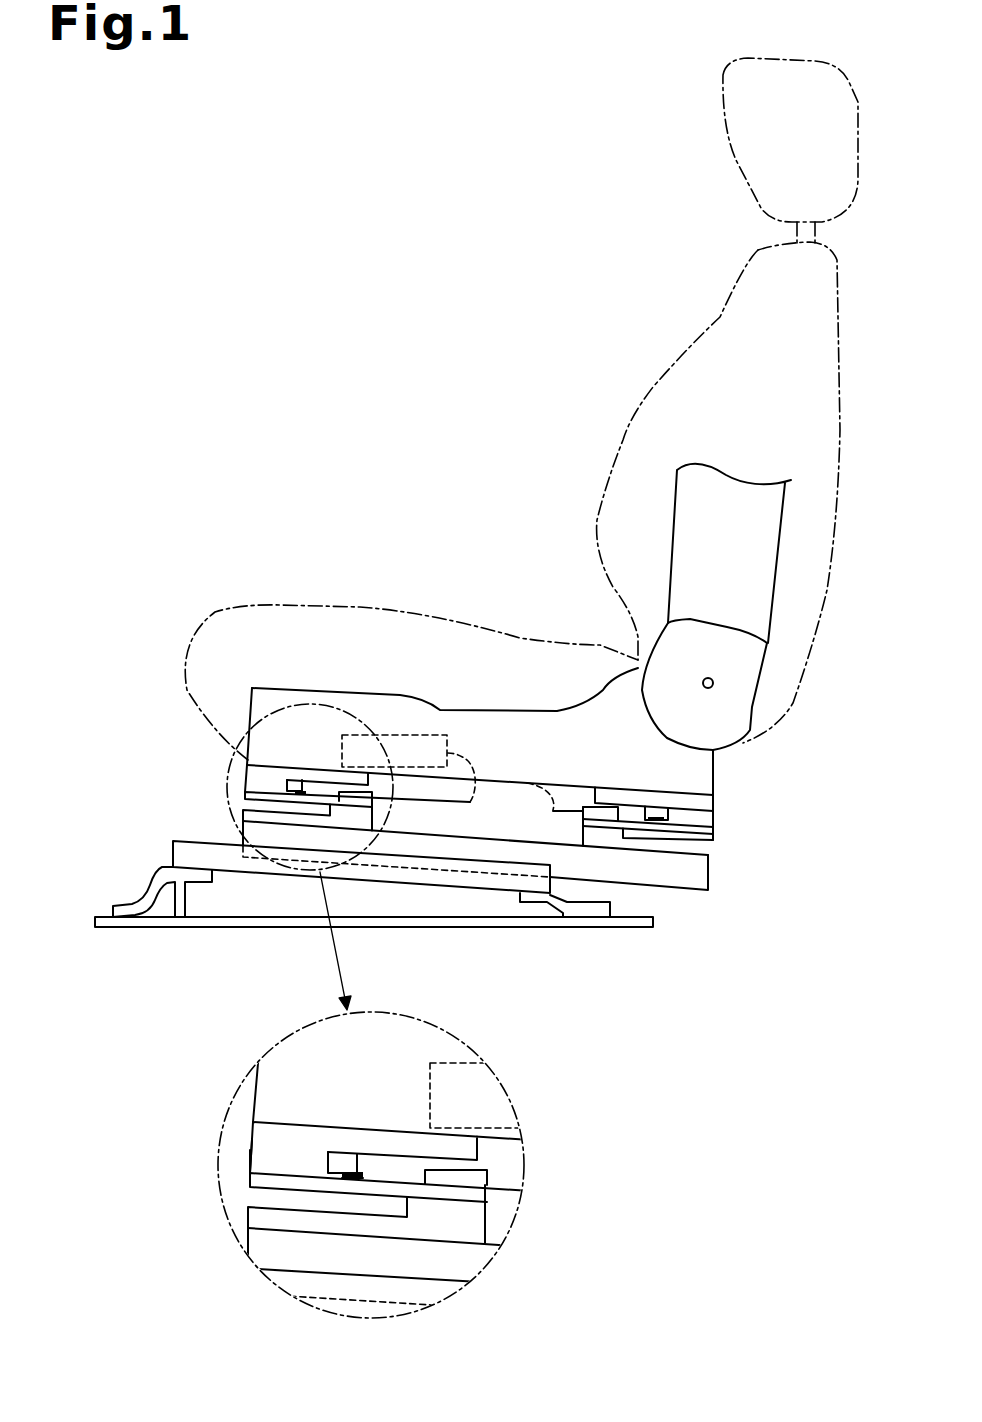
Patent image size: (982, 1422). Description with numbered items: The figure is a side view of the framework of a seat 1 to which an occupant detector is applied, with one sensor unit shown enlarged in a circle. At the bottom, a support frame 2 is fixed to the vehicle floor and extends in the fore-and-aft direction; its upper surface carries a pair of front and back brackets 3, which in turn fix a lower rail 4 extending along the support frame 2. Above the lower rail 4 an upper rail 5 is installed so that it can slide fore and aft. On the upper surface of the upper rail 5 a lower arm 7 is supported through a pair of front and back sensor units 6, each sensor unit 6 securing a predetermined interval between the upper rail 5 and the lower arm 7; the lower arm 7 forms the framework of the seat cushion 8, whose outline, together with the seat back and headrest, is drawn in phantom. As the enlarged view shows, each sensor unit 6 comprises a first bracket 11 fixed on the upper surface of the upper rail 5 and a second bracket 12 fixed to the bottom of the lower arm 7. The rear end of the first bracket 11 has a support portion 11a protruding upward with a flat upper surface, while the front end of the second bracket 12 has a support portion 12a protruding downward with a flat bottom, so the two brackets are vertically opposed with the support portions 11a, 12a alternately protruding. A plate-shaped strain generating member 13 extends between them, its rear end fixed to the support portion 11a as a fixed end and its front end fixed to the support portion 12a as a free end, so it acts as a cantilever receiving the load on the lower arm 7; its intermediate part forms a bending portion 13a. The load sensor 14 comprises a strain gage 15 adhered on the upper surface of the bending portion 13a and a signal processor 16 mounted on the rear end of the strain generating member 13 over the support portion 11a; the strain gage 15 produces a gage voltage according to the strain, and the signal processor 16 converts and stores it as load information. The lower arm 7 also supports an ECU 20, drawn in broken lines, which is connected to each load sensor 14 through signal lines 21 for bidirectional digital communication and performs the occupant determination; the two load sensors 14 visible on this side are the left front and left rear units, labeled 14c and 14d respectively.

The seat 1 is at (607, 353).
The support frame 2 is at (104, 917).
The front and back brackets 3 is at (132, 903).
The lower rail 4 is at (183, 842).
The upper rail 5 is at (687, 880).
The sensor unit 6 is at (255, 780).
The lower arm 7 is at (367, 700).
The seat cushion 8 is at (258, 605).
The first bracket 11 is at (330, 1225).
The support portion 11a is at (470, 1218).
The second bracket 12 is at (293, 1140).
The support portion 12a is at (260, 1155).
The strain generating member 13 is at (260, 1192).
The bending portion 13a is at (352, 1183).
The load sensor 14 is at (353, 656).
The load sensor 14c is at (327, 704).
The load sensor 14d is at (620, 768).
The strain gage 15 is at (303, 790).
The signal processor 16 is at (352, 790).
The ECU 20 is at (415, 737).
The signal lines 21 is at (437, 800).